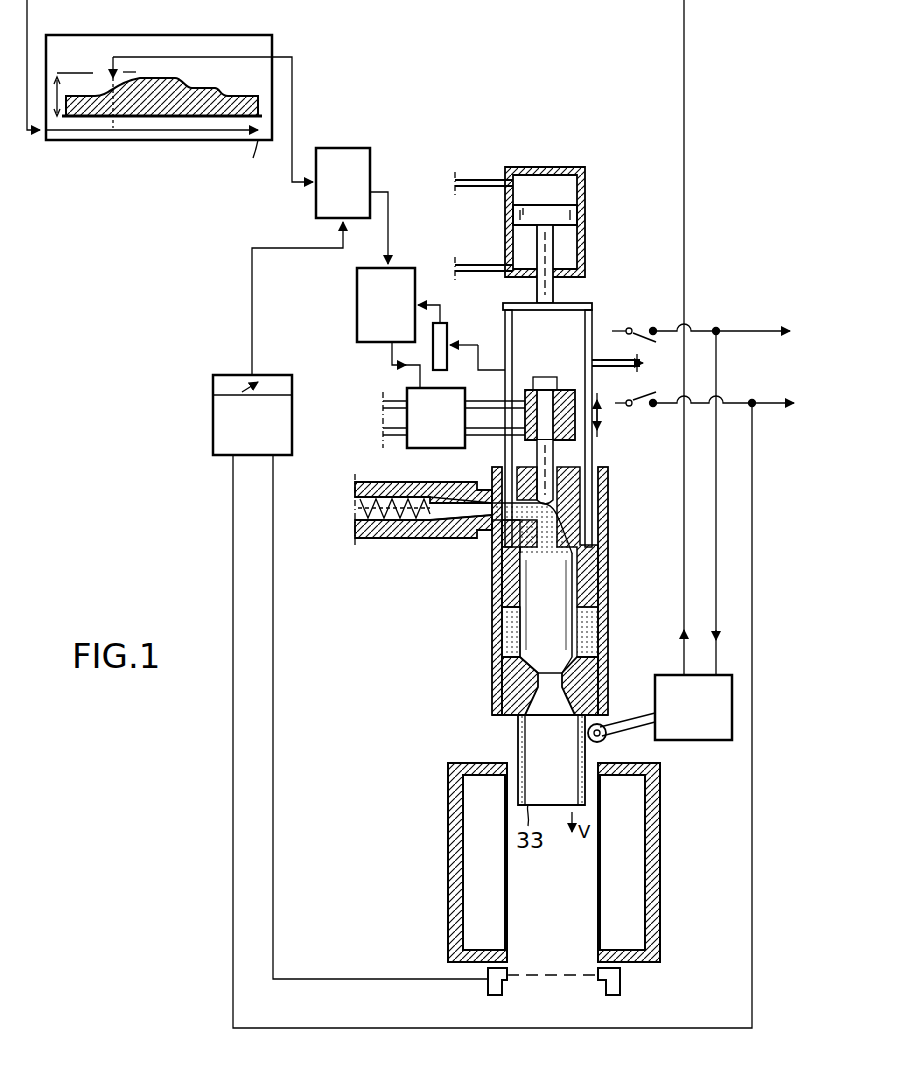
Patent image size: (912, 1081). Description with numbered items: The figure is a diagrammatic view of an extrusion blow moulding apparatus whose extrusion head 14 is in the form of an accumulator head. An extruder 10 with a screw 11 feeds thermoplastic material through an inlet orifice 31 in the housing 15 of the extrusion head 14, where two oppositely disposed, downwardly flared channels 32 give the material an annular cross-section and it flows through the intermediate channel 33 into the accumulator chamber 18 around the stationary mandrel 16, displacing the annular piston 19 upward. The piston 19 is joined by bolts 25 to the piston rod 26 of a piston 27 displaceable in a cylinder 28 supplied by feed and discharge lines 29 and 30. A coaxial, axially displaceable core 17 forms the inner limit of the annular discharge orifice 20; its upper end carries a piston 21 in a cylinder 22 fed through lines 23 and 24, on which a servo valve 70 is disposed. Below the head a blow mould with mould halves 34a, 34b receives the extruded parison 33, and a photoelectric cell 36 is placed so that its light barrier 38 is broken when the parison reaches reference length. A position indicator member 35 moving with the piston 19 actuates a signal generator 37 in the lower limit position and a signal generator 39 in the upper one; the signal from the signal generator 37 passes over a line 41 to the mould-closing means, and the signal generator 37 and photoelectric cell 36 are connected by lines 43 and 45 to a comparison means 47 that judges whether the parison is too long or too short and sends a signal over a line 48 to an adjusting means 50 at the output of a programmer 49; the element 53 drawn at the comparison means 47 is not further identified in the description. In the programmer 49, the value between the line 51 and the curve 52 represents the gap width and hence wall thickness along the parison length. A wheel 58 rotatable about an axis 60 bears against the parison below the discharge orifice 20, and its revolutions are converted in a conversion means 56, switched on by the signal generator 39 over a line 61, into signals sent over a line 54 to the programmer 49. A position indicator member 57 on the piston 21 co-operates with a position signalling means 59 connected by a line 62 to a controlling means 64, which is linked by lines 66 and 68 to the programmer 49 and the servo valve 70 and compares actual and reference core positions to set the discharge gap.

The extruder 10 is at (400, 540).
The screw 11 is at (386, 492).
The extrusion head 14 is at (612, 572).
The housing 15 is at (600, 625).
The stationary mandrel 16 is at (562, 637).
The core 17 is at (550, 705).
The accumulator chamber 18 is at (508, 650).
The piston 19 is at (502, 588).
The discharge orifice 20 is at (512, 692).
The piston 21 is at (556, 410).
The cylinder 22 is at (611, 401).
The feed and discharge line 23 is at (496, 405).
The feed and discharge line 24 is at (488, 437).
The bolts 25 is at (585, 322).
The piston rod 26 is at (553, 253).
The piston 27 is at (577, 198).
The cylinder 28 is at (585, 243).
The feed and discharge line 29 is at (476, 176).
The feed and discharge line 30 is at (481, 264).
The inlet orifice 31 is at (478, 528).
The channels 32 is at (566, 535).
The intermediate channel / parison 33 is at (540, 595).
The mould half 34a is at (448, 814).
The mould half 34b is at (660, 818).
The position indicator member 35 is at (600, 357).
The photoelectric cell 36 is at (487, 984).
The signal generator 37 is at (640, 400).
The light barrier 38 is at (560, 972).
The signal generator 39 is at (641, 330).
The line 41 is at (763, 400).
The line 43 is at (752, 878).
The line 45 is at (372, 978).
The comparison means 47 is at (290, 430).
The line 48 is at (252, 312).
The programmer 49 is at (195, 141).
The adjusting means 50 is at (366, 165).
The line 51 is at (153, 120).
The curve 52 is at (200, 90).
The setpoint adjuster 53 is at (290, 386).
The line 54 is at (684, 42).
The conversion means 56 is at (715, 741).
The position indicator member 57 is at (462, 348).
The wheel 58 is at (614, 720).
The position signalling means 59 is at (447, 332).
The axis 60 is at (606, 736).
The line 61 is at (732, 503).
The line 62 is at (437, 300).
The controlling means 64 is at (366, 318).
The line 66 is at (392, 218).
The line 68 is at (396, 366).
The servo valve 70 is at (410, 418).